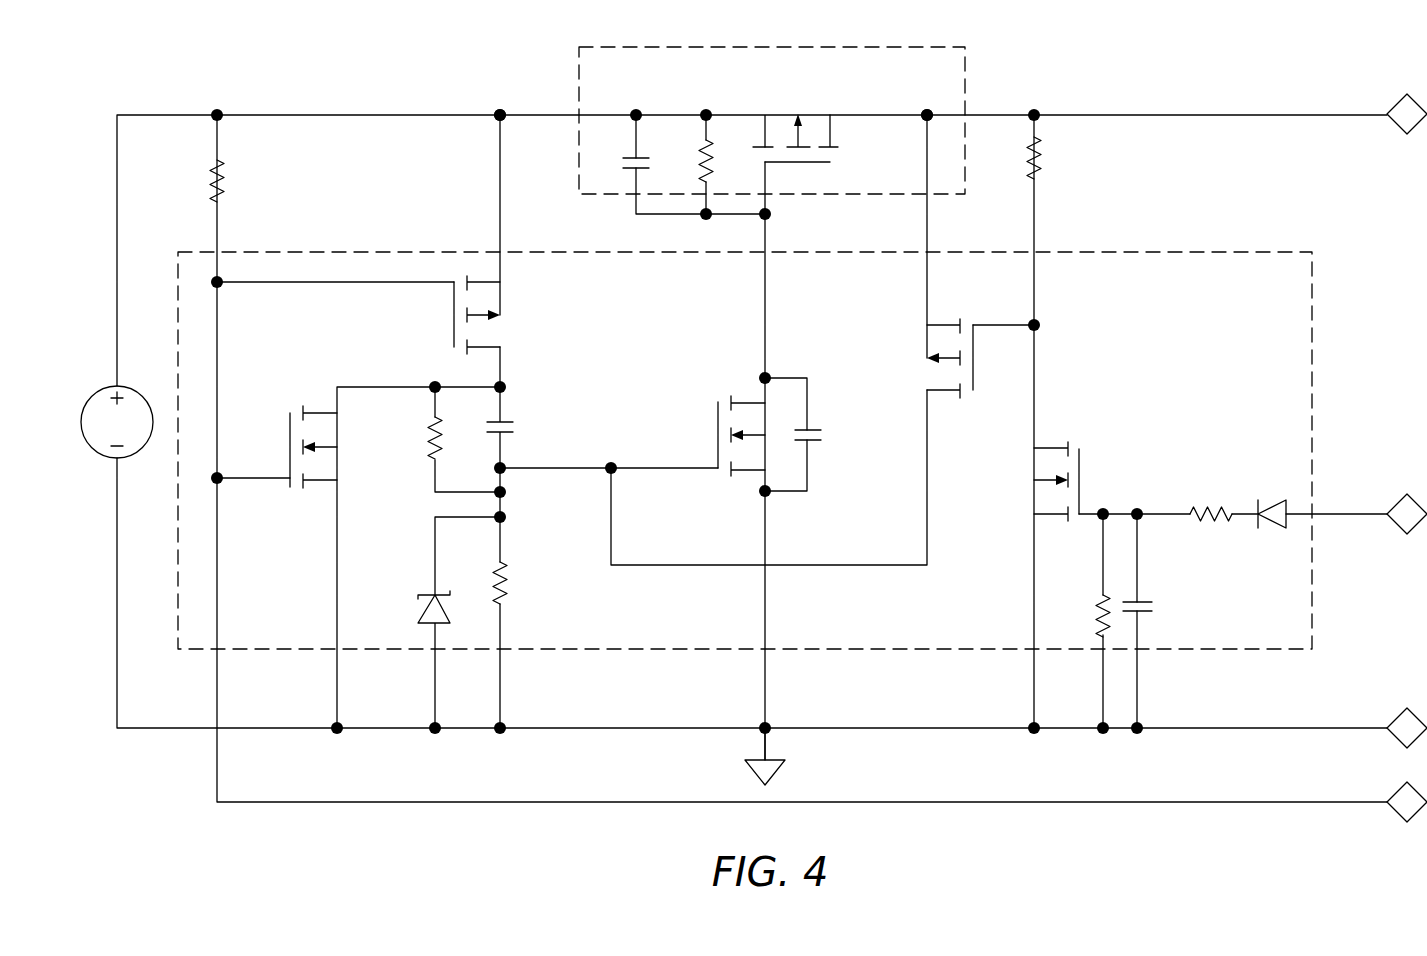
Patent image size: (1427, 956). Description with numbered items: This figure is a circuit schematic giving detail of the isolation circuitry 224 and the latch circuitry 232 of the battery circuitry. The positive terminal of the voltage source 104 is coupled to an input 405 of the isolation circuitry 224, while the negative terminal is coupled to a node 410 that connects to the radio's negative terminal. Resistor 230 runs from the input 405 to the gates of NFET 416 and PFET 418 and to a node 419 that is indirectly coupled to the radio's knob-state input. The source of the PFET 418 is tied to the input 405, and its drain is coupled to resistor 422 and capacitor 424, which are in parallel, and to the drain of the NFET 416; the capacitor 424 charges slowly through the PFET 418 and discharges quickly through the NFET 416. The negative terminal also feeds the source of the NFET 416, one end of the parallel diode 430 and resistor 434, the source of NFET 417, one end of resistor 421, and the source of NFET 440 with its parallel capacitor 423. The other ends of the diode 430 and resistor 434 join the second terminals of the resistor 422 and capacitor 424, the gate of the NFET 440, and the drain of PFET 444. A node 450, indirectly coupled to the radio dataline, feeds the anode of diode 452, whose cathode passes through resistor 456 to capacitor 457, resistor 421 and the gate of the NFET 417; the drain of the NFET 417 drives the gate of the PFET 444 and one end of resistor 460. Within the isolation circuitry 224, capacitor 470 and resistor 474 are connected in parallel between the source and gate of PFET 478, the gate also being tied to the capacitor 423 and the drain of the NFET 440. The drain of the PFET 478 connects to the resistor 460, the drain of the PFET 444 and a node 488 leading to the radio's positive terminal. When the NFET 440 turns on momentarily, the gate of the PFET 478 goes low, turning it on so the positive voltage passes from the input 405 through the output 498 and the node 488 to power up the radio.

The voltage source 104 is at (96, 394).
The isolation circuitry 224 is at (772, 46).
The resistor 230 is at (226, 190).
The latch circuitry 232 is at (1313, 330).
The input 405 is at (578, 112).
The node 410 is at (1397, 713).
The NFET 416 is at (323, 412).
The NFET 417 is at (1048, 447).
The PFET 418 is at (504, 300).
The node 419 is at (1397, 787).
The resistor 421 is at (1095, 607).
The resistor 422 is at (428, 441).
The capacitor 423 is at (818, 428).
The capacitor 424 is at (512, 422).
The diode 430 is at (425, 612).
The resistor 434 is at (510, 588).
The NFET 440 is at (748, 401).
The PFET 444 is at (944, 392).
The node 450 is at (1396, 500).
The diode 452 is at (1275, 500).
The resistor 456 is at (1213, 521).
The capacitor 457 is at (1146, 603).
The resistor 460 is at (1041, 162).
The capacitor 470 is at (630, 170).
The resistor 474 is at (700, 172).
The PFET 478 is at (832, 139).
The node 488 is at (1396, 100).
The output 498 is at (966, 113).